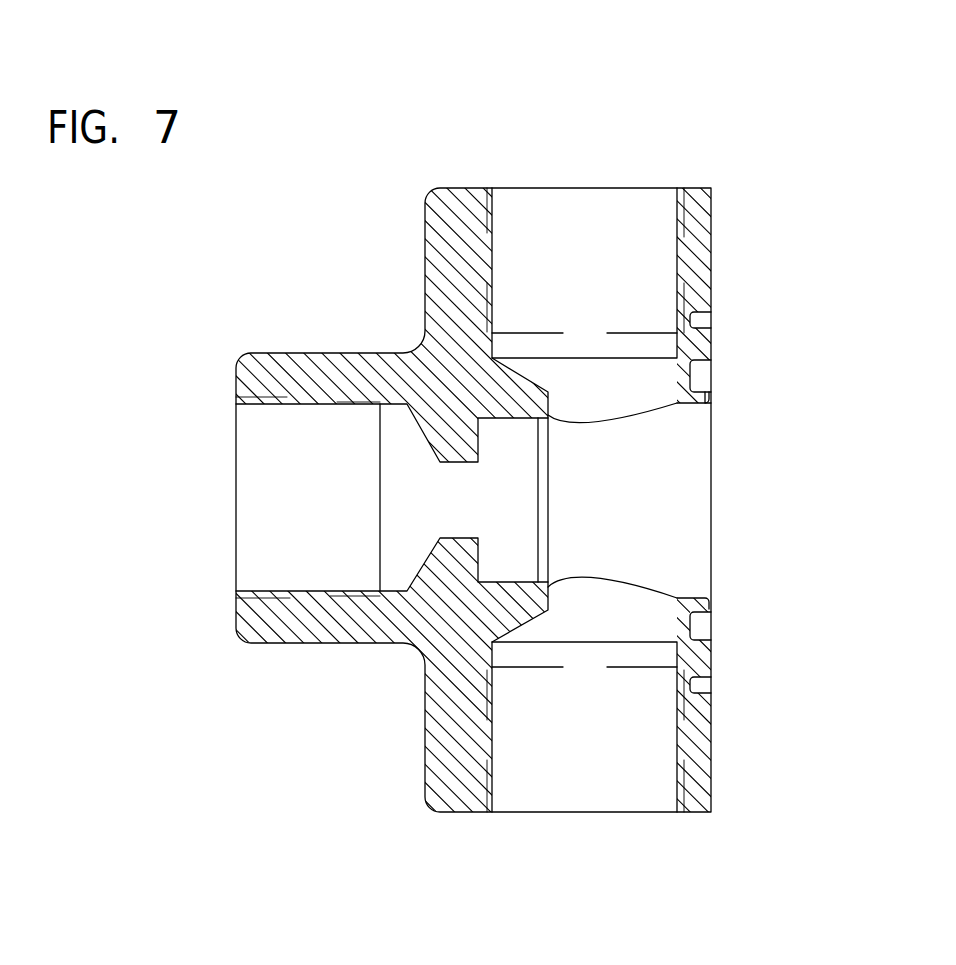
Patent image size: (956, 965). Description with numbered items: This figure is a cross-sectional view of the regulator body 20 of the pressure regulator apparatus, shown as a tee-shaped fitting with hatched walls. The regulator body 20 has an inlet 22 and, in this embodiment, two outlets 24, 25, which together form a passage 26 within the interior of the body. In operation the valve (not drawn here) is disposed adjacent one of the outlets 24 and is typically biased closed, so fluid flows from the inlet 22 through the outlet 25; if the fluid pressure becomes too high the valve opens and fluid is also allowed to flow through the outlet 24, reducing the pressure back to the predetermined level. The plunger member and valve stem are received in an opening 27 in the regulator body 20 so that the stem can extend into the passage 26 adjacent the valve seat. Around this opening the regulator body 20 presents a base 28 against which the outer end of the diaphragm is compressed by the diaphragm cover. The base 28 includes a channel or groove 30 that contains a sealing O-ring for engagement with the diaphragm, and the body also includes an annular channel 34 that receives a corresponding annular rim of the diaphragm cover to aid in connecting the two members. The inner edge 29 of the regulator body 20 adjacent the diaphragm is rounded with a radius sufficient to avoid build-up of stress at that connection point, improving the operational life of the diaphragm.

The regulator body 20 is at (361, 703).
The inlet 22 is at (566, 792).
The outlet 24 is at (267, 540).
The outlet 25 is at (601, 205).
The passage 26 is at (610, 558).
The opening 27 is at (697, 543).
The base 28 is at (711, 655).
The inner edge 29 is at (708, 403).
The groove 30 is at (690, 378).
The annular channel 34 is at (702, 320).